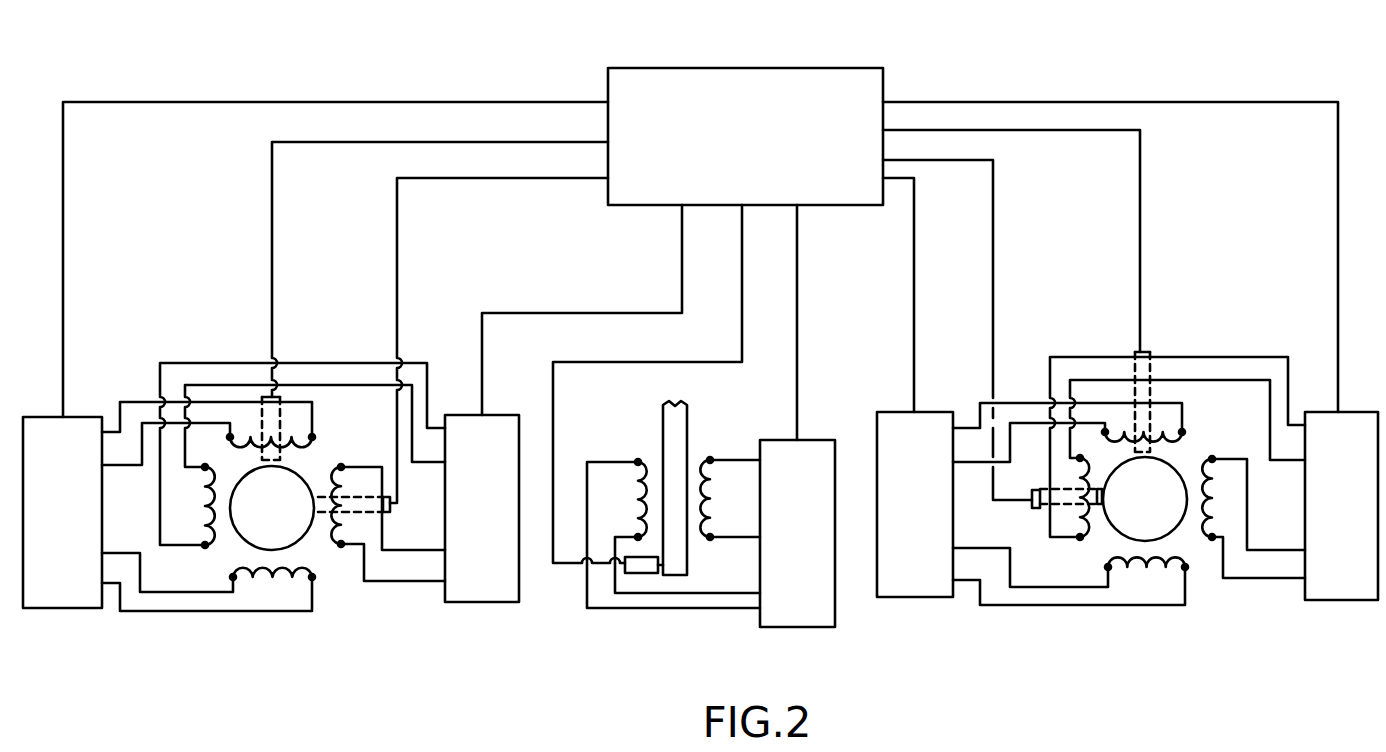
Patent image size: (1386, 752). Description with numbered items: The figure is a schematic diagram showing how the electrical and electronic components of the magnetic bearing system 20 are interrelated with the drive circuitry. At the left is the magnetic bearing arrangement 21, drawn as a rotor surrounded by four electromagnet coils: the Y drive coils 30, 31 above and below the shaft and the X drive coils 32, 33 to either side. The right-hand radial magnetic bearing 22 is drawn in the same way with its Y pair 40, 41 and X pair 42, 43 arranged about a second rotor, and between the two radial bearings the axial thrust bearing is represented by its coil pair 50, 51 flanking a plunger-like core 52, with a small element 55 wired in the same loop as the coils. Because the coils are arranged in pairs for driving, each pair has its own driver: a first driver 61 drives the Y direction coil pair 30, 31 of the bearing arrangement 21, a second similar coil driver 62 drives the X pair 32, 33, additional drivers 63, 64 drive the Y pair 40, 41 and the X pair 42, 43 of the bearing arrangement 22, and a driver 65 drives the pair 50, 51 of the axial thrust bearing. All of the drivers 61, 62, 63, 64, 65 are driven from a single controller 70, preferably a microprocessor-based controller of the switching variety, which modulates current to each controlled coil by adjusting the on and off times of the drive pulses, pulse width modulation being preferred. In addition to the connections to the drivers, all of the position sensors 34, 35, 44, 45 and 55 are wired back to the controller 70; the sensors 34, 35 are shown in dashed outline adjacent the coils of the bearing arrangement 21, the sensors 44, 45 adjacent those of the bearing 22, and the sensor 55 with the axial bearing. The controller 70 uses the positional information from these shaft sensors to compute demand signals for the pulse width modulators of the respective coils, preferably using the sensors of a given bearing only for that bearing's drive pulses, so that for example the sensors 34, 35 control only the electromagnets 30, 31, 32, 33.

The controller 70 is at (857, 68).
The magnetic bearing system 20 is at (530, 272).
The magnetic bearing arrangement 21 is at (213, 343).
The right-hand radial magnetic bearing 22 is at (1245, 335).
The Y drive coil 30 is at (312, 437).
The Y drive coil 31 is at (312, 577).
The X drive coil 32 is at (205, 545).
The X drive coil 33 is at (341, 467).
The position sensor 34 is at (285, 410).
The X sensor 35 is at (365, 514).
The Y drive coil 40 is at (1182, 432).
The Y drive coil 41 is at (1185, 567).
The X drive coil 42 is at (1080, 537).
The X drive coil 43 is at (1212, 459).
The position sensor 44 is at (1150, 393).
The position sensor 45 is at (1037, 513).
The axial thrust bearing coil 50 is at (638, 462).
The axial thrust bearing coil 51 is at (710, 460).
The actuator plunger core 52 is at (673, 575).
The position sensor 55 is at (650, 573).
The first driver 61 is at (70, 608).
The second coil driver 62 is at (488, 602).
The driver 63 is at (940, 597).
The driver 64 is at (1347, 600).
The driver 65 is at (827, 627).